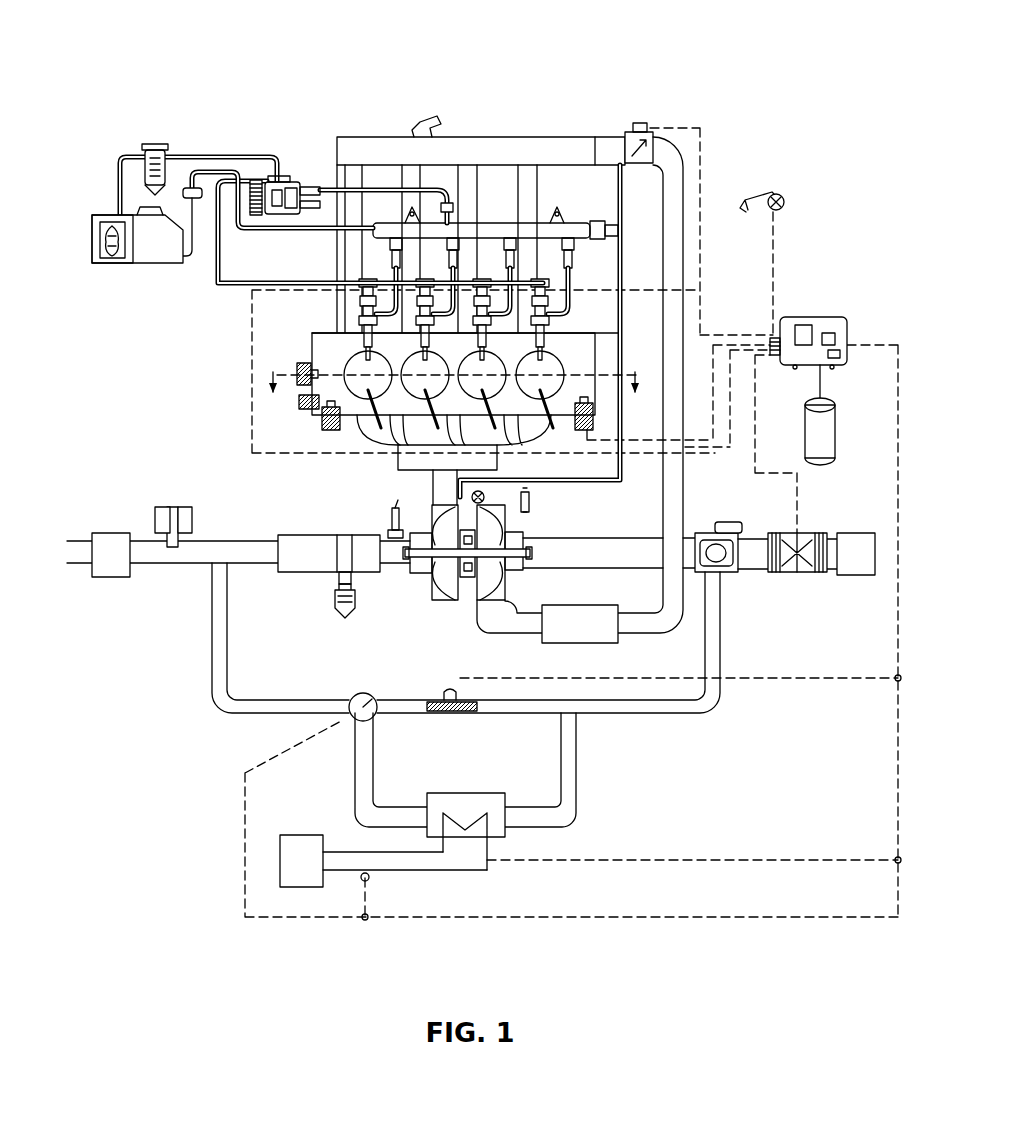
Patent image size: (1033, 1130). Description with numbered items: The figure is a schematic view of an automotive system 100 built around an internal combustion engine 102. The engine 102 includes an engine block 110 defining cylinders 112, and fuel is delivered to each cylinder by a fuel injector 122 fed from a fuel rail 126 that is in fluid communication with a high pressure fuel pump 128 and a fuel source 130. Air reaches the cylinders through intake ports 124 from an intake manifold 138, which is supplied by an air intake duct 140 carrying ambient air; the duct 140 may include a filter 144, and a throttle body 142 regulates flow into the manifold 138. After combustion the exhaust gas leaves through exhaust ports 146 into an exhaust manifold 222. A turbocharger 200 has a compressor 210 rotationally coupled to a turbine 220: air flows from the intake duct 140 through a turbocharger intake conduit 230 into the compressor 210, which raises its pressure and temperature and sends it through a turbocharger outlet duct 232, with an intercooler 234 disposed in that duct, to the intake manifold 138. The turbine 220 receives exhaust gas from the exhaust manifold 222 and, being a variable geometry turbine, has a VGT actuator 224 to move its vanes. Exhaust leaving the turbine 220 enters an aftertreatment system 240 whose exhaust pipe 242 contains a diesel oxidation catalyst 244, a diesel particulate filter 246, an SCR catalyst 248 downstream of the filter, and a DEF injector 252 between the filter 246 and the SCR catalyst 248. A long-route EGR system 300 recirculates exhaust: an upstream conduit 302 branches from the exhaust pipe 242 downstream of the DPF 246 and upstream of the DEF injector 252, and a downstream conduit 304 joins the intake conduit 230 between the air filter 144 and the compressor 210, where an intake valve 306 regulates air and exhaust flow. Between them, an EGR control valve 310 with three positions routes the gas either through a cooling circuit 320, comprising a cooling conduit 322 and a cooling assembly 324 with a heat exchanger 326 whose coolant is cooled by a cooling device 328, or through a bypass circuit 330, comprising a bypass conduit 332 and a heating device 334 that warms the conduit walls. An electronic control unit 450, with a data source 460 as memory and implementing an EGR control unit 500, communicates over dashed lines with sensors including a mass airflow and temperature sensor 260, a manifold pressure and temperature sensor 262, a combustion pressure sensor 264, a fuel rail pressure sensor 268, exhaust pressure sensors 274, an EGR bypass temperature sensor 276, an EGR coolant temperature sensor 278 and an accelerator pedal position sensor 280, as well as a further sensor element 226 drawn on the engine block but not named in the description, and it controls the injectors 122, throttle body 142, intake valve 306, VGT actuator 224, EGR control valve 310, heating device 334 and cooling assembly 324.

The automotive system 100 is at (230, 52).
The internal combustion engine 102 is at (530, 126).
The engine block 110 is at (312, 342).
The cylinder 112 is at (563, 366).
The fuel injector 122 is at (362, 312).
The intake port 124 is at (310, 338).
The fuel rail 126 is at (373, 232).
The high pressure fuel pump 128 is at (285, 182).
The fuel source 130 is at (150, 258).
The intake manifold 138 is at (507, 152).
The air intake duct 140 is at (765, 540).
The throttle body 142 is at (641, 130).
The filter 144 is at (853, 565).
The exhaust port 146 is at (355, 440).
The turbocharger 200 is at (488, 572).
The compressor 210 is at (493, 577).
The turbine 220 is at (440, 597).
The exhaust manifold 222 is at (497, 457).
The VGT actuator 224 is at (484, 497).
The engine sensor 226 is at (330, 433).
The turbocharger intake conduit 230 is at (622, 560).
The turbocharger outlet duct 232 is at (683, 470).
The intercooler 234 is at (575, 625).
The aftertreatment system 240 is at (238, 553).
The exhaust pipe 242 is at (188, 563).
The diesel oxidation catalyst 244 is at (370, 552).
The diesel particulate filter 246 is at (302, 573).
The SCR catalyst 248 is at (112, 577).
The DEF injector 252 is at (165, 507).
The mass airflow and temperature sensor 260 is at (795, 575).
The manifold pressure and temperature sensor 262 is at (424, 124).
The combustion pressure sensor 264 is at (377, 433).
The fuel rail pressure sensor 268 is at (618, 230).
The exhaust pressure sensor 274 is at (393, 565).
The EGR bypass temperature sensor 276 is at (450, 700).
The EGR coolant temperature sensor 278 is at (370, 880).
The accelerator pedal position sensor 280 is at (775, 187).
The long-route EGR system 300 is at (467, 767).
The LR-EGR upstream conduit 302 is at (210, 672).
The LR-EGR downstream conduit 304 is at (660, 715).
The intake valve 306 is at (725, 575).
The EGR control valve 310 is at (356, 694).
The cooling circuit 320 is at (421, 842).
The cooling conduit 322 is at (360, 765).
The cooling assembly 324 is at (447, 790).
The heat exchanger 326 is at (505, 830).
The cooling device 328 is at (300, 887).
The bypass circuit 330 is at (510, 718).
The bypass conduit 332 is at (400, 698).
The heating device 334 is at (455, 718).
The electronic control unit 450 is at (820, 320).
The data source 460 is at (832, 425).
The EGR control unit 500 is at (785, 335).